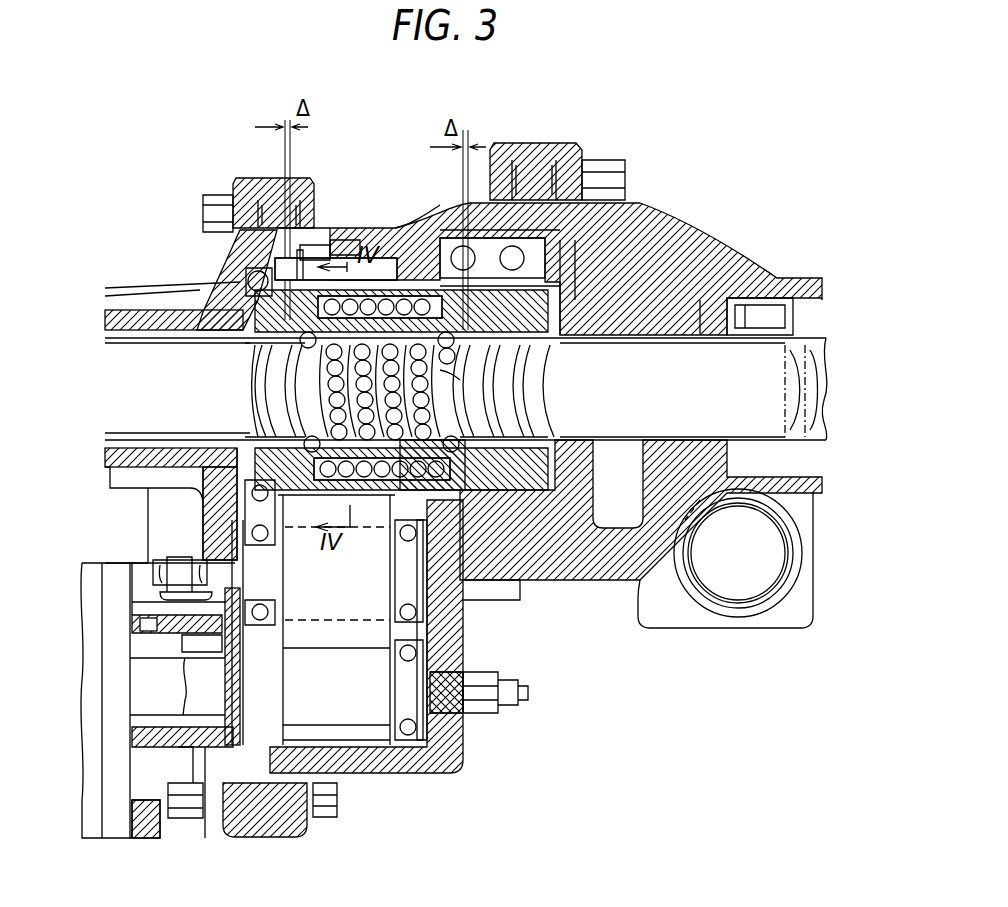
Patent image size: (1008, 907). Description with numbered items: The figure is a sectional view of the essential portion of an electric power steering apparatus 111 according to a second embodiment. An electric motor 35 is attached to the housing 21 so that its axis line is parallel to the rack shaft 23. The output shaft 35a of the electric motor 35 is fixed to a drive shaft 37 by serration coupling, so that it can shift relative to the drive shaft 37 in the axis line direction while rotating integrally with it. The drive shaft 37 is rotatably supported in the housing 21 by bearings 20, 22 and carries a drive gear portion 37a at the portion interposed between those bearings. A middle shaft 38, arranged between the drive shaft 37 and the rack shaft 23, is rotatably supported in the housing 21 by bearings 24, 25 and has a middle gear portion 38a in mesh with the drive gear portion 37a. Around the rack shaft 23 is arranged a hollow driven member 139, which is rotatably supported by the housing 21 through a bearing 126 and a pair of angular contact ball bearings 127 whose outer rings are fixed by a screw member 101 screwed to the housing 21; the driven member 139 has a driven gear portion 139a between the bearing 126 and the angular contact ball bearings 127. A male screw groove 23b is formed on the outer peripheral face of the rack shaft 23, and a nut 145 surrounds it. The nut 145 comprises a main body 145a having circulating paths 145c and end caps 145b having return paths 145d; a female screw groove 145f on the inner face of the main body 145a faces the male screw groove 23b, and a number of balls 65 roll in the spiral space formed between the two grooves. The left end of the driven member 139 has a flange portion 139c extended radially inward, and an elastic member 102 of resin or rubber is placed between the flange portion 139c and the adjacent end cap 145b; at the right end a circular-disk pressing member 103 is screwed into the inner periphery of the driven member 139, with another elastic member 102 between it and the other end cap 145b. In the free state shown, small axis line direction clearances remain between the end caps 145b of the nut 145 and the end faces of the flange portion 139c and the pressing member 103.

The electric power steering apparatus 111 is at (119, 193).
The housing 21 is at (246, 178).
The angular contact ball bearings 127 is at (470, 262).
The driven gear portion 139a is at (344, 240).
The main body 145a is at (400, 228).
The driven member 139 is at (434, 255).
The screw member 101 is at (645, 240).
The pressing member 103 is at (692, 268).
The rack shaft 23 is at (732, 360).
The circulating paths 145c is at (312, 248).
The bearing 126 is at (240, 278).
The flange portion 139c is at (248, 280).
The elastic member 102 is at (190, 305).
The end caps 145b is at (265, 370).
The male screw groove 23b is at (250, 372).
The female screw groove 145f is at (262, 382).
The return paths 145d is at (260, 418).
The balls 65 is at (450, 392).
The nut 145 is at (232, 512).
The bearing 24 is at (250, 525).
The bearing 25 is at (445, 578).
The middle shaft 38 is at (440, 612).
The drive shaft 37 is at (440, 704).
The bearing 22 is at (438, 758).
The middle gear portion 38a is at (410, 660).
The drive gear portion 37a is at (350, 700).
The electric motor 35 is at (93, 805).
The output shaft 35a is at (205, 720).
The bearing 20 is at (255, 745).